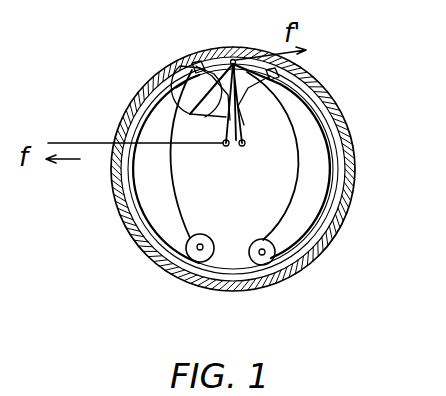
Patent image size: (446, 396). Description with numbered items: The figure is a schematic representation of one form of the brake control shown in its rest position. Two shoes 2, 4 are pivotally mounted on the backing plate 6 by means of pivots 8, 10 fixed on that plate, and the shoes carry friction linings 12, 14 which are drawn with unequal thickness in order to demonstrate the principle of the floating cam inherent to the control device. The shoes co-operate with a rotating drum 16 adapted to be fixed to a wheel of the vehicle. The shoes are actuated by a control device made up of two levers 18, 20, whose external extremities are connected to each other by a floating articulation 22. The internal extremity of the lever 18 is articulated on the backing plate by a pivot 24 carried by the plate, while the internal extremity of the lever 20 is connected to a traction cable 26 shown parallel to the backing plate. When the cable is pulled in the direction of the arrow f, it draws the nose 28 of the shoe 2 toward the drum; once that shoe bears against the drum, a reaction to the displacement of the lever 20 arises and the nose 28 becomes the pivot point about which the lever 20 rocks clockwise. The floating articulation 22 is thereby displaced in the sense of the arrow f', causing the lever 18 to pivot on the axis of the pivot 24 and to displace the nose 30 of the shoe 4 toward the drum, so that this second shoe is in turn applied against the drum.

The shoe 2 is at (177, 222).
The shoe 4 is at (307, 145).
The backing plate 6 is at (273, 205).
The pivot 8 is at (261, 255).
The pivot 10 is at (197, 251).
The friction lining 12 is at (128, 170).
The friction lining 14 is at (333, 160).
The rotating drum 16 is at (137, 237).
The lever 18 is at (244, 125).
The lever 20 is at (176, 88).
The floating articulation 22 is at (234, 60).
The pivot 24 is at (242, 146).
The traction cable 26 is at (201, 147).
The nose 28 is at (210, 88).
The nose 30 is at (273, 77).